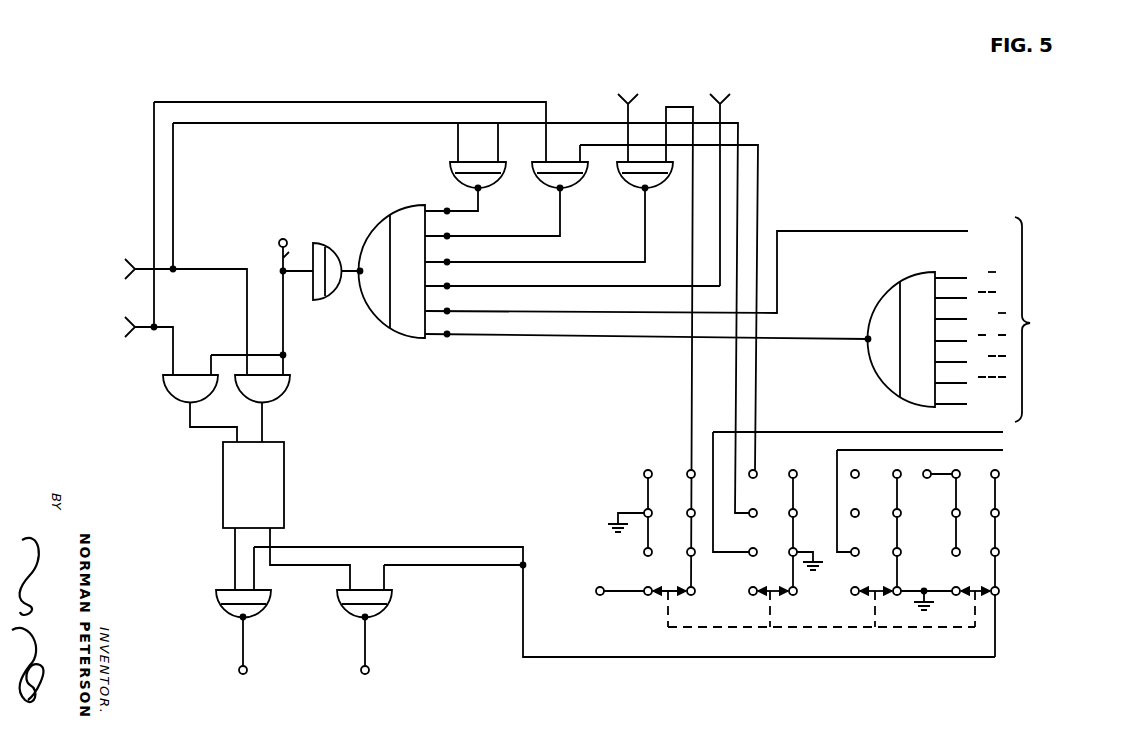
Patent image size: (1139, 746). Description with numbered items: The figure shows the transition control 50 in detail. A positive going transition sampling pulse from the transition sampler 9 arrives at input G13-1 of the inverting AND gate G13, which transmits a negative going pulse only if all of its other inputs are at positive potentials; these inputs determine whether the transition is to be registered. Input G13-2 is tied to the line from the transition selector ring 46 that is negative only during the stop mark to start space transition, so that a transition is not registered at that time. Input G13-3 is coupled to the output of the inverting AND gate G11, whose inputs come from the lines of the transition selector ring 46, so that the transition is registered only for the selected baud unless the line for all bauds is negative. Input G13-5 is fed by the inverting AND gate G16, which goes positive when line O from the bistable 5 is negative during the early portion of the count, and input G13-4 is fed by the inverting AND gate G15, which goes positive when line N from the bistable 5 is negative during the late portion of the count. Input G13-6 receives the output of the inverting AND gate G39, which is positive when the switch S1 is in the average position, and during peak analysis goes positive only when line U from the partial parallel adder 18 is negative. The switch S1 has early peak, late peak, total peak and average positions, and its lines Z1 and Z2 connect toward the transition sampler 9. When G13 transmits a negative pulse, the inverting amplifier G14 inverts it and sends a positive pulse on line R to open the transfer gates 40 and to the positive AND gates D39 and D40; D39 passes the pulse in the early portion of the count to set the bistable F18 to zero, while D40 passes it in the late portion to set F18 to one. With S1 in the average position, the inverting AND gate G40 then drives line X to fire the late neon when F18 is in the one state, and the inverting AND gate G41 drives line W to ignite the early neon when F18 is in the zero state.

The transition control 50 is at (580, 367).
The bistable 5 is at (140, 313).
The partial parallel adder 18 is at (628, 82).
The transition sampler 9 is at (723, 152).
The transfer gates 40 is at (286, 288).
The transition selector ring 46 is at (1013, 319).
The inverting AND gate G11 is at (870, 356).
The inverting AND gate G13 is at (378, 304).
The input of inverting AND gate G13 G13-1 is at (455, 288).
The input of inverting AND gate G13 G13-2 is at (455, 313).
The input of inverting AND gate G13 G13-3 is at (455, 336).
The input of inverting AND gate G13 G13-4 is at (455, 238).
The input of inverting AND gate G13 G13-5 is at (455, 213).
The input of inverting AND gate G13 G13-6 is at (455, 264).
The inverting amplifier G14 is at (318, 291).
The inverting AND gate G15 is at (569, 192).
The inverting AND gate G16 is at (487, 192).
The inverting AND gate G39 is at (654, 192).
The inverting AND gate G40 is at (262, 608).
The inverting AND gate G41 is at (383, 608).
The positive AND gate D39 is at (212, 392).
The positive AND gate D40 is at (285, 392).
The bistable F18 is at (253, 485).
The switch S1 is at (800, 629).
The line Z1 is at (947, 452).
The line Z2 is at (940, 431).